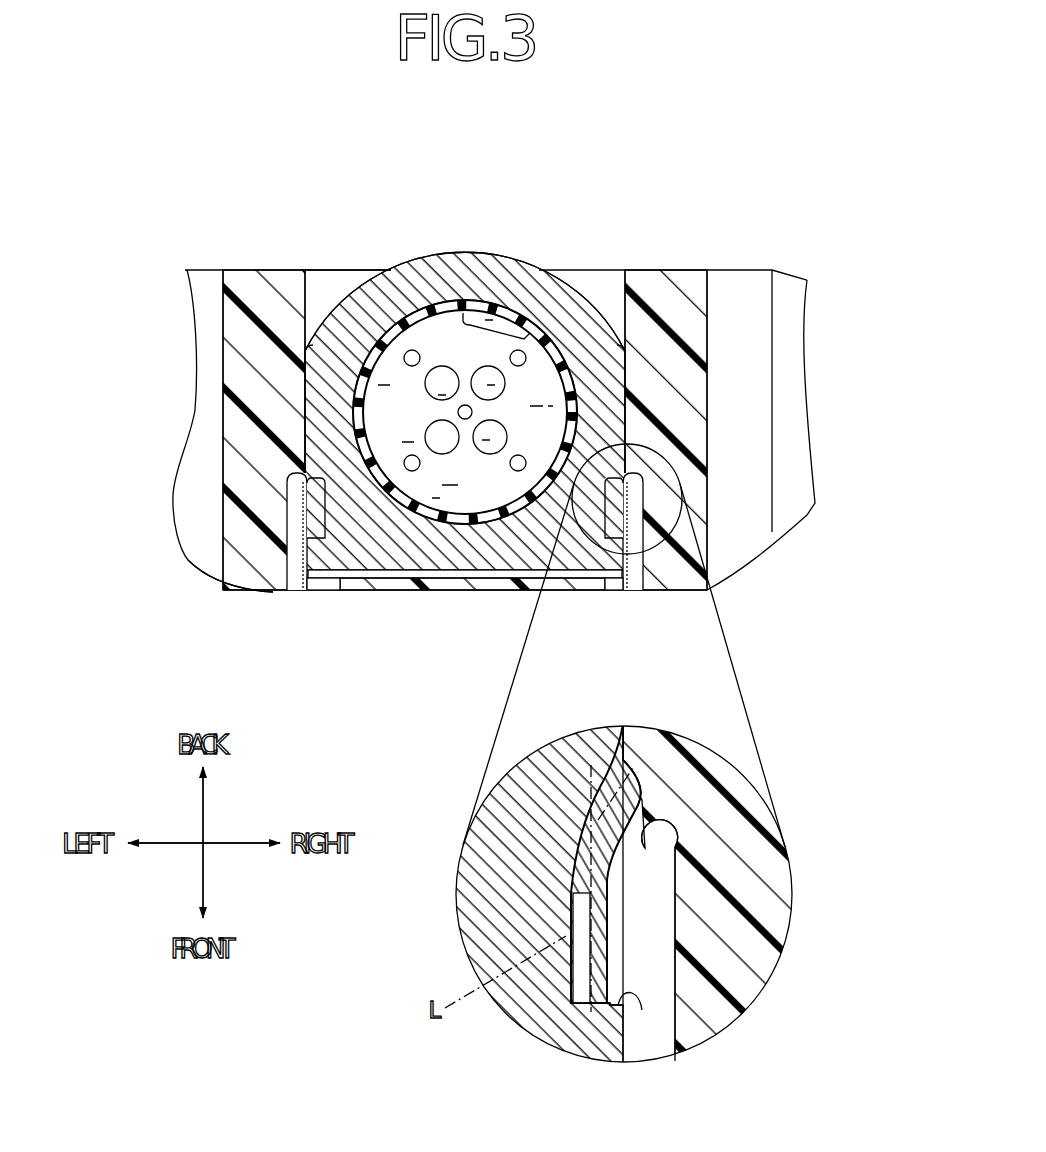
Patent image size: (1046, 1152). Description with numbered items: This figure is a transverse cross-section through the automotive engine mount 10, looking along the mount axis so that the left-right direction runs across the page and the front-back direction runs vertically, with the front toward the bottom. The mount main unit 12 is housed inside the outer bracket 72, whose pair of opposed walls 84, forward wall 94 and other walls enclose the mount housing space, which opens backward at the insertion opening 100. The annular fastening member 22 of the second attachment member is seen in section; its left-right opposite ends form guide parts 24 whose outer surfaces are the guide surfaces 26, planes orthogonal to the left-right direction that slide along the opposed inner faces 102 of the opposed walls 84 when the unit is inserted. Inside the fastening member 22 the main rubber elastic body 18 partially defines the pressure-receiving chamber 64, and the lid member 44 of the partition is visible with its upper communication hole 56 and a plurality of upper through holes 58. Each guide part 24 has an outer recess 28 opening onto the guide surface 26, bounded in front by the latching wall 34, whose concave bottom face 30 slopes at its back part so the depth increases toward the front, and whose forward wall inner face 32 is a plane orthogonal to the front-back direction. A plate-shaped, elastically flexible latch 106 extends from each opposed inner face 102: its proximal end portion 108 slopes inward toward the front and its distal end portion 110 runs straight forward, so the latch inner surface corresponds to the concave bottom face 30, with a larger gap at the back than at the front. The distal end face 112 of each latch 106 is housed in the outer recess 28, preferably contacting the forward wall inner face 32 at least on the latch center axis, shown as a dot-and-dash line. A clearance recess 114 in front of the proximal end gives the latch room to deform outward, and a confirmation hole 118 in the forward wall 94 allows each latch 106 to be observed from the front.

The engine mount 10 is at (800, 242).
The mount main unit 12 is at (488, 234).
The main rubber elastic body 18 is at (503, 307).
The fastening member 22 is at (558, 268).
The guide part 24 is at (300, 405).
The guide surface 26 is at (303, 380).
The outer recess 28 is at (320, 512).
The concave bottom face 30 is at (580, 875).
The forward wall inner face 32 is at (640, 1010).
The latching wall 34 is at (315, 560).
The lid member 44 is at (438, 343).
The upper communication hole 56 is at (472, 315).
The upper through holes 58 is at (430, 392).
The pressure-receiving chamber 64 is at (479, 362).
The outer bracket 72 is at (198, 590).
The opposed wall 84 is at (247, 337).
The forward wall 94 is at (447, 582).
The insertion opening 100 is at (305, 264).
The opposed inner face 102 is at (307, 305).
The latch 106 is at (310, 498).
The proximal end portion 108 is at (597, 819).
The distal end portion 110 is at (598, 950).
The distal end face 112 is at (583, 1007).
The clearance recess 114 is at (665, 832).
The confirmation hole 118 is at (332, 583).